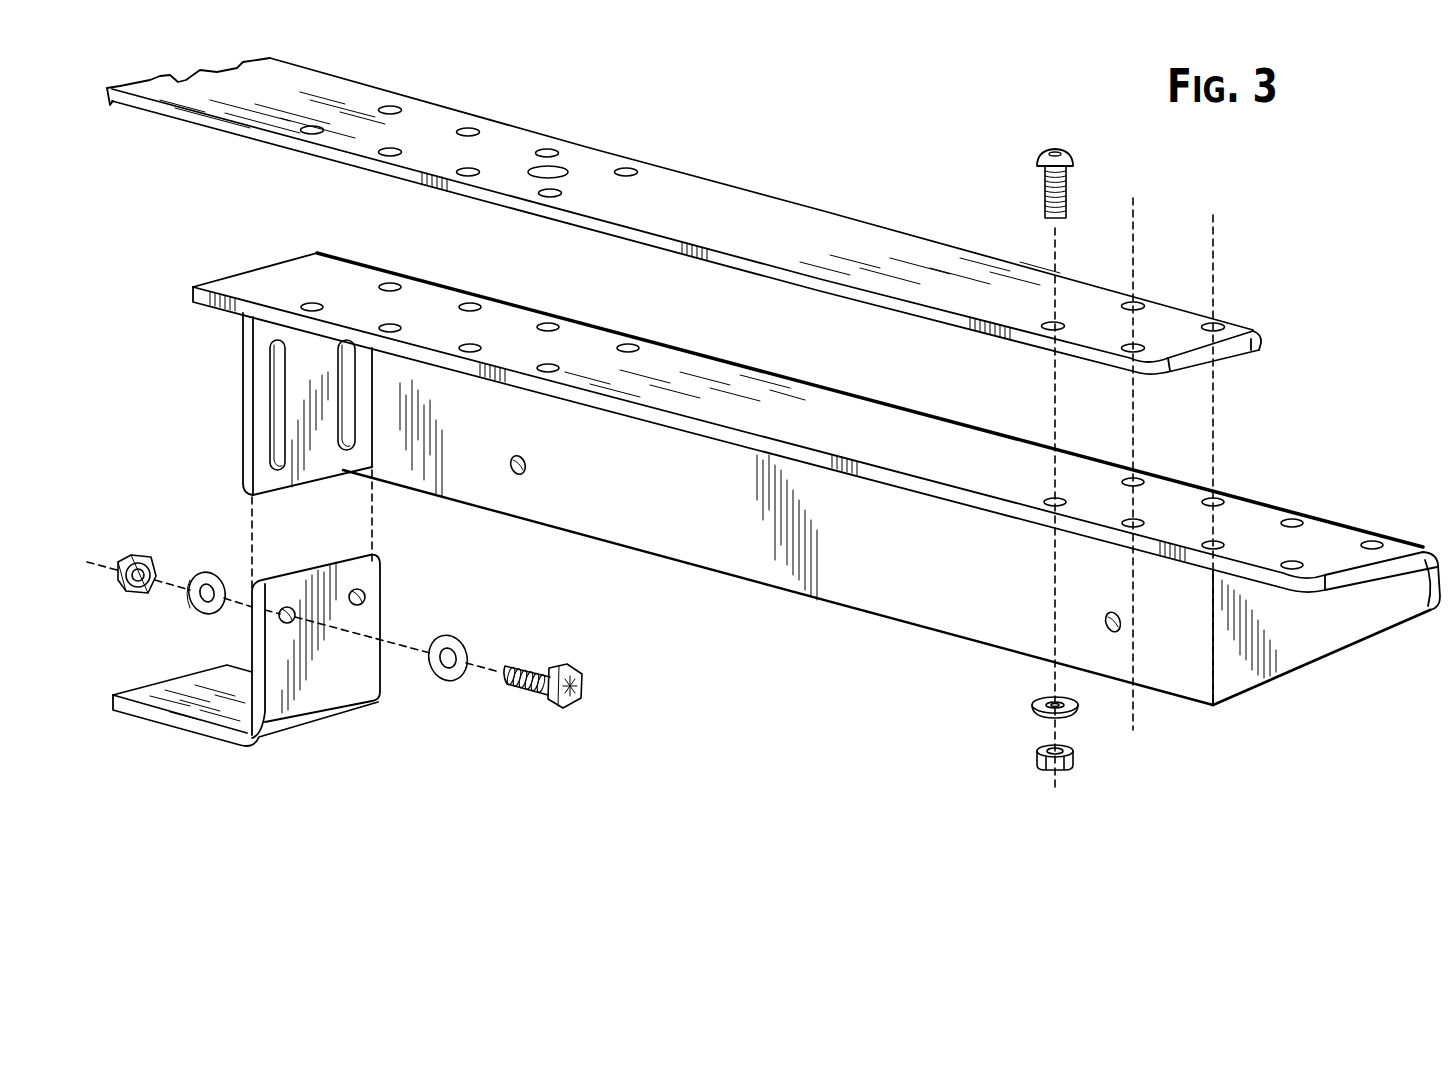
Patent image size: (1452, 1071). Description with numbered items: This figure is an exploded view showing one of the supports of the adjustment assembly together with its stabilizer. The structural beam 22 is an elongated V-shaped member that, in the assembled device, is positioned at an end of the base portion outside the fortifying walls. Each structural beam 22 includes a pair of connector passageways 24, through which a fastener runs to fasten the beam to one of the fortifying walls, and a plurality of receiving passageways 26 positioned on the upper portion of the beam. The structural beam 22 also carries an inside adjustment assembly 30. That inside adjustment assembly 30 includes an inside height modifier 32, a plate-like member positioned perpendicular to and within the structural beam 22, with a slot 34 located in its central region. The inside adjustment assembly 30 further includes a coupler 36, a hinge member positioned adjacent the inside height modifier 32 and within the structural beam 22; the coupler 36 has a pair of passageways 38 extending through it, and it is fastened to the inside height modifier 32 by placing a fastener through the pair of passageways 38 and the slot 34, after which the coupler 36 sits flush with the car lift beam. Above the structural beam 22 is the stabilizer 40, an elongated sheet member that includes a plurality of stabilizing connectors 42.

The structural beam 22 is at (831, 400).
The connector passageway 24 is at (522, 474).
The receiving passageway 26 is at (548, 322).
The inside adjustment assembly 30 is at (267, 694).
The inside height modifier 32 is at (245, 335).
The slot 34 is at (273, 427).
The coupler 36 is at (307, 700).
The passageway 38 is at (366, 598).
The stabilizer 40 is at (796, 220).
The stabilizing connector 42 is at (624, 168).